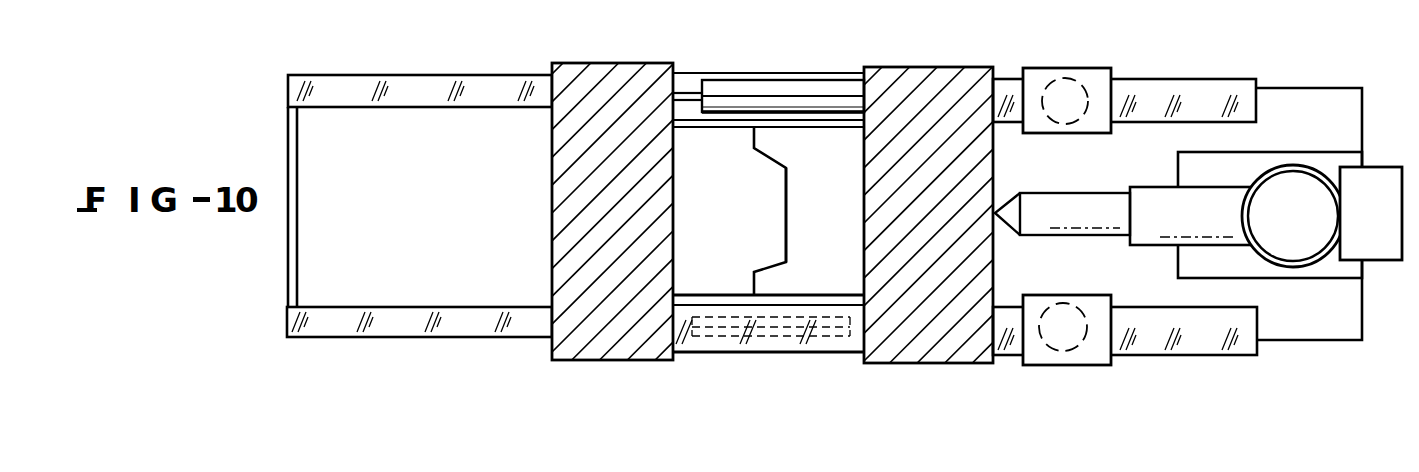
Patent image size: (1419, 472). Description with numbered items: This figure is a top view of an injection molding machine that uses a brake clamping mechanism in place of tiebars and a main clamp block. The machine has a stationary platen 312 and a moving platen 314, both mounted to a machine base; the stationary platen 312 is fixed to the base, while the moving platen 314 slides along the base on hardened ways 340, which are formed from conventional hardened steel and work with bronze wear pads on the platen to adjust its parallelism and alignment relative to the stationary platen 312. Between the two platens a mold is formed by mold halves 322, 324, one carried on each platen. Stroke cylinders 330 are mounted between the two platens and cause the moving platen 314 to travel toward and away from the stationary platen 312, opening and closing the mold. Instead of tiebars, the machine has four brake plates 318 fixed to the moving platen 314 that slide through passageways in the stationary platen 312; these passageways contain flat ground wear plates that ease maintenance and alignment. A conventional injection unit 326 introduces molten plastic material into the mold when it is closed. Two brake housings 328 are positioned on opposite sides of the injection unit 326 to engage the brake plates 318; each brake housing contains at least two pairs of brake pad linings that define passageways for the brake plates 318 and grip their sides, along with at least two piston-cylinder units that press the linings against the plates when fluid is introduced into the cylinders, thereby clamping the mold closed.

The stationary platen 312 is at (944, 254).
The moving platen 314 is at (624, 217).
The brake plates 318 is at (1162, 87).
The mold half 322 is at (734, 213).
The mold half 324 is at (841, 213).
The injection unit 326 is at (1262, 190).
The brake housings 328 is at (1038, 78).
The stroke cylinders 330 is at (735, 90).
The hardened ways 340 is at (428, 90).